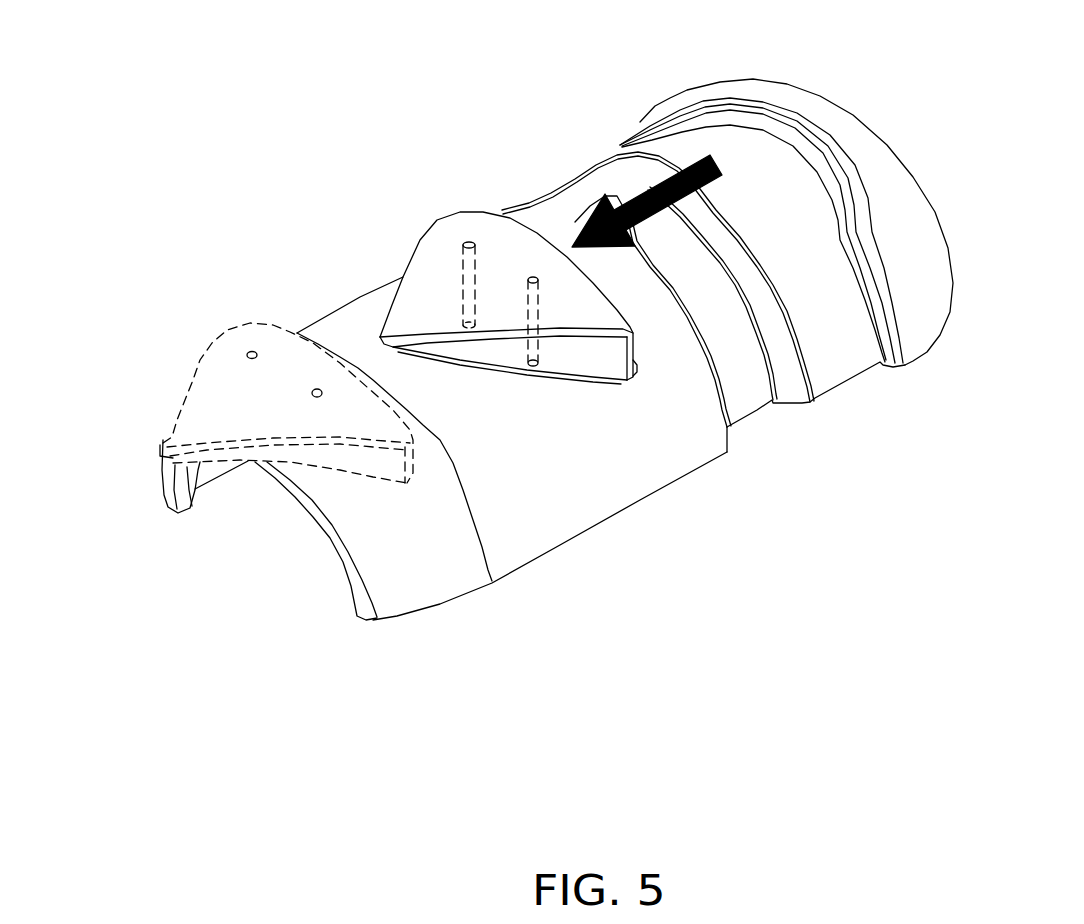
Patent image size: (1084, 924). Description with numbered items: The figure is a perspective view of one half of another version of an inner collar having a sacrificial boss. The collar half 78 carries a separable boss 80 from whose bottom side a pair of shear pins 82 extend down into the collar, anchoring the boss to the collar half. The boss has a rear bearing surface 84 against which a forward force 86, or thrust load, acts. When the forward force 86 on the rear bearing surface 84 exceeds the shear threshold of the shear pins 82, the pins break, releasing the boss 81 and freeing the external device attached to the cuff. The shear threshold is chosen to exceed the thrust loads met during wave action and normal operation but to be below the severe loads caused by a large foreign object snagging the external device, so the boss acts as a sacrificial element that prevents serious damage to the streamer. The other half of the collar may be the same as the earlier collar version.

The collar half 78 is at (786, 188).
The separable boss 80 is at (495, 230).
The boss 81 is at (235, 403).
The shear pins 82 is at (545, 413).
The rear bearing surface 84 is at (658, 227).
The forward force 86 is at (753, 208).